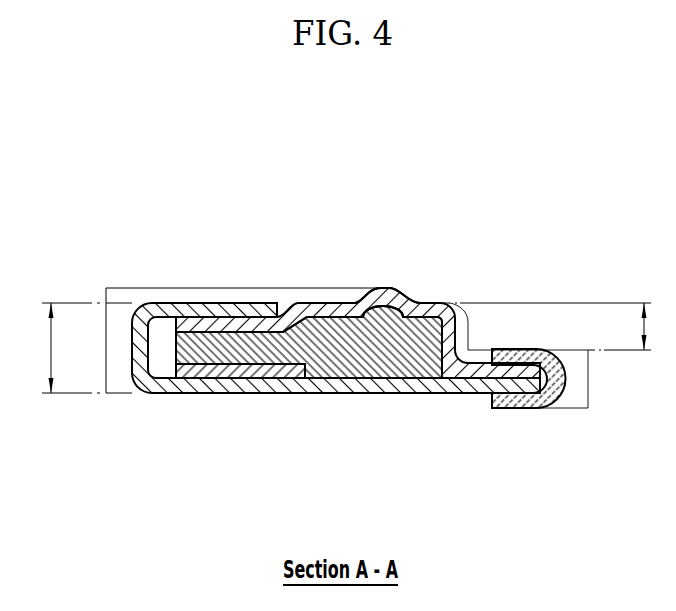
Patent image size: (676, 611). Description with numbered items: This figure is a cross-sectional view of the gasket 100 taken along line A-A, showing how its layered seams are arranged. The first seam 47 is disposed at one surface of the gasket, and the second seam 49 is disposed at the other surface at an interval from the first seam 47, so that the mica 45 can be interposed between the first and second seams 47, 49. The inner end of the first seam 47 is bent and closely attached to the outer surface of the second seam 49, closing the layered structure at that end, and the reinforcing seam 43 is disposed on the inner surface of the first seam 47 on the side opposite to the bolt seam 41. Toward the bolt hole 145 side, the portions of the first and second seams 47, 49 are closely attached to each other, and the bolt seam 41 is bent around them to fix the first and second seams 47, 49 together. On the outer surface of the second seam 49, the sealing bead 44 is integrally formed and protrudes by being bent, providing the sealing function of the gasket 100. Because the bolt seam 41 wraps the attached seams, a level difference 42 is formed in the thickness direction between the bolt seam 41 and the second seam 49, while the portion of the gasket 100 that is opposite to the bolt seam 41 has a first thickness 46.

The gasket 100 is at (306, 408).
The bolt seam 41 is at (522, 406).
The level difference 42 is at (557, 326).
The reinforcing seam 43 is at (195, 395).
The sealing bead 44 is at (383, 291).
The mica 45 is at (385, 363).
The first thickness 46 is at (62, 348).
The first seam 47 is at (242, 395).
The second seam 49 is at (422, 306).
The bolt hole 145 is at (582, 390).